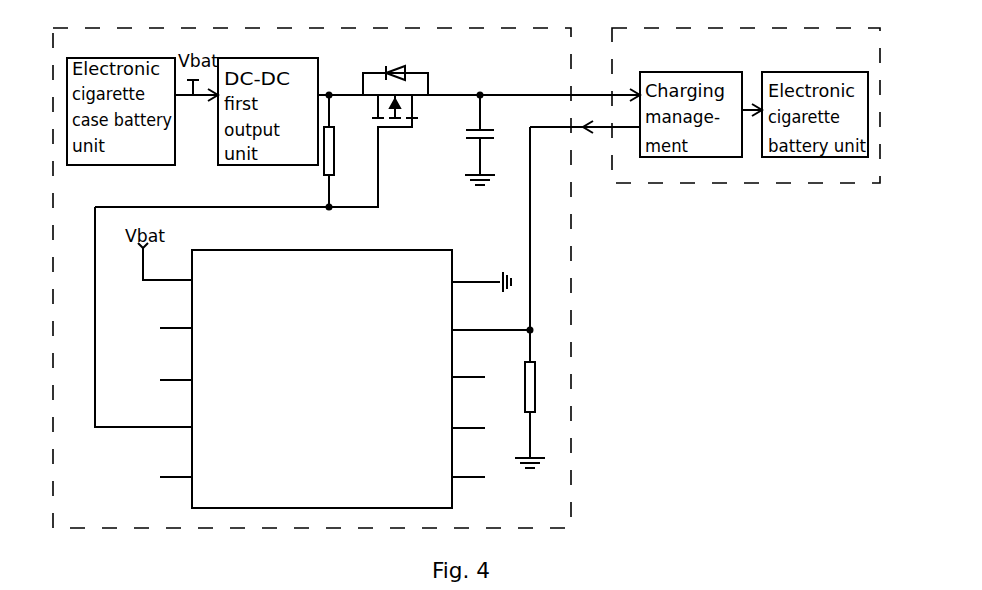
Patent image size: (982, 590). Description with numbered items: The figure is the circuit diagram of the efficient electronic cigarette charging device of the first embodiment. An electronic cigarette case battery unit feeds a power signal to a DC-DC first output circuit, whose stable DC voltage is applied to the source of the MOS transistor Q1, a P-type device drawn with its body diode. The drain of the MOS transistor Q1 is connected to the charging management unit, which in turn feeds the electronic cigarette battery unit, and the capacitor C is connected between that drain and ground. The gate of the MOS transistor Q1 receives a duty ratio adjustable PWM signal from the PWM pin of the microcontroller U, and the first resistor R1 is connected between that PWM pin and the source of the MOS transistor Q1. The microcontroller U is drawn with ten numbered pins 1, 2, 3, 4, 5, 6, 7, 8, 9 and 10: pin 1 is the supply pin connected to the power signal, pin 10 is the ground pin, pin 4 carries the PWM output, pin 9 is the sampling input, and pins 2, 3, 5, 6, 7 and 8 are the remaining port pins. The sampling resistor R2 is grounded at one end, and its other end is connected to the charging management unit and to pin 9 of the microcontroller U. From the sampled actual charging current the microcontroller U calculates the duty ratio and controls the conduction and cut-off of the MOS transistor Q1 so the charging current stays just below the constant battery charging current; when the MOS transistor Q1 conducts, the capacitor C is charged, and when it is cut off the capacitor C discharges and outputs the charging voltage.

The microcontroller U is at (322, 367).
The MOS transistor Q1 is at (395, 82).
The first resistor R1 is at (344, 151).
The sampling resistor R2 is at (543, 387).
The capacitor C is at (488, 140).
The VDD pin 1 is at (176, 270).
The P0.2/Xout pin 2 is at (176, 317).
The P0.4/RST/Vpp pin 3 is at (176, 368).
The P5.3/BZ1/PWM1 pin 4 is at (176, 417).
The P5.4/BZ0/PWM0 pin 5 is at (176, 464).
The P4.0/AIN0/AverfH pin 6 is at (468, 465).
The P4.1/AIN1 pin 7 is at (468, 416).
The P4.2/AIN2 pin 8 is at (468, 365).
The P4.4/AIN4 pin 9 is at (468, 318).
The VSS pin 10 is at (468, 271).